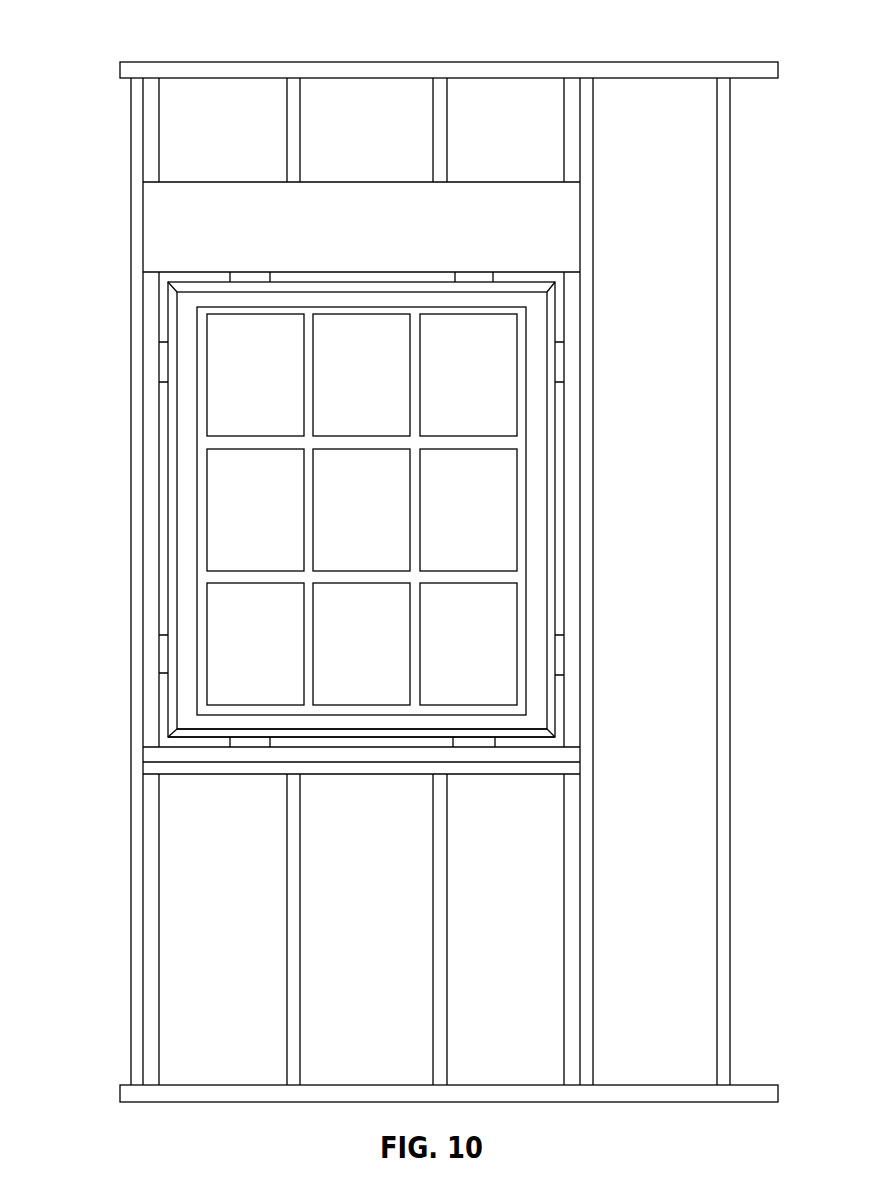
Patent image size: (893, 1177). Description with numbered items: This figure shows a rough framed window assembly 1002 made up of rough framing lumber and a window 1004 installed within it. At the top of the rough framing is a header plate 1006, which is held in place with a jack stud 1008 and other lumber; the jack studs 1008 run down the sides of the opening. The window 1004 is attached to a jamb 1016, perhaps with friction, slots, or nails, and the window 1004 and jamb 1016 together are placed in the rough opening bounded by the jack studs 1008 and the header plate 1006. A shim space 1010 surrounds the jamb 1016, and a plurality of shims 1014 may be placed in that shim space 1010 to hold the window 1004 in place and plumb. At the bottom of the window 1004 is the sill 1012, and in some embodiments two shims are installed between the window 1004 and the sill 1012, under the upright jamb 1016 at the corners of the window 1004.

The rough framed window assembly 1002 is at (136, 40).
The window 1004 is at (388, 521).
The header plate 1006 is at (562, 215).
The jack stud 1008 is at (572, 502).
The shim space 1010 is at (560, 697).
The sill 1012 is at (345, 752).
The shims 1014 is at (250, 273).
The jamb 1016 is at (172, 498).